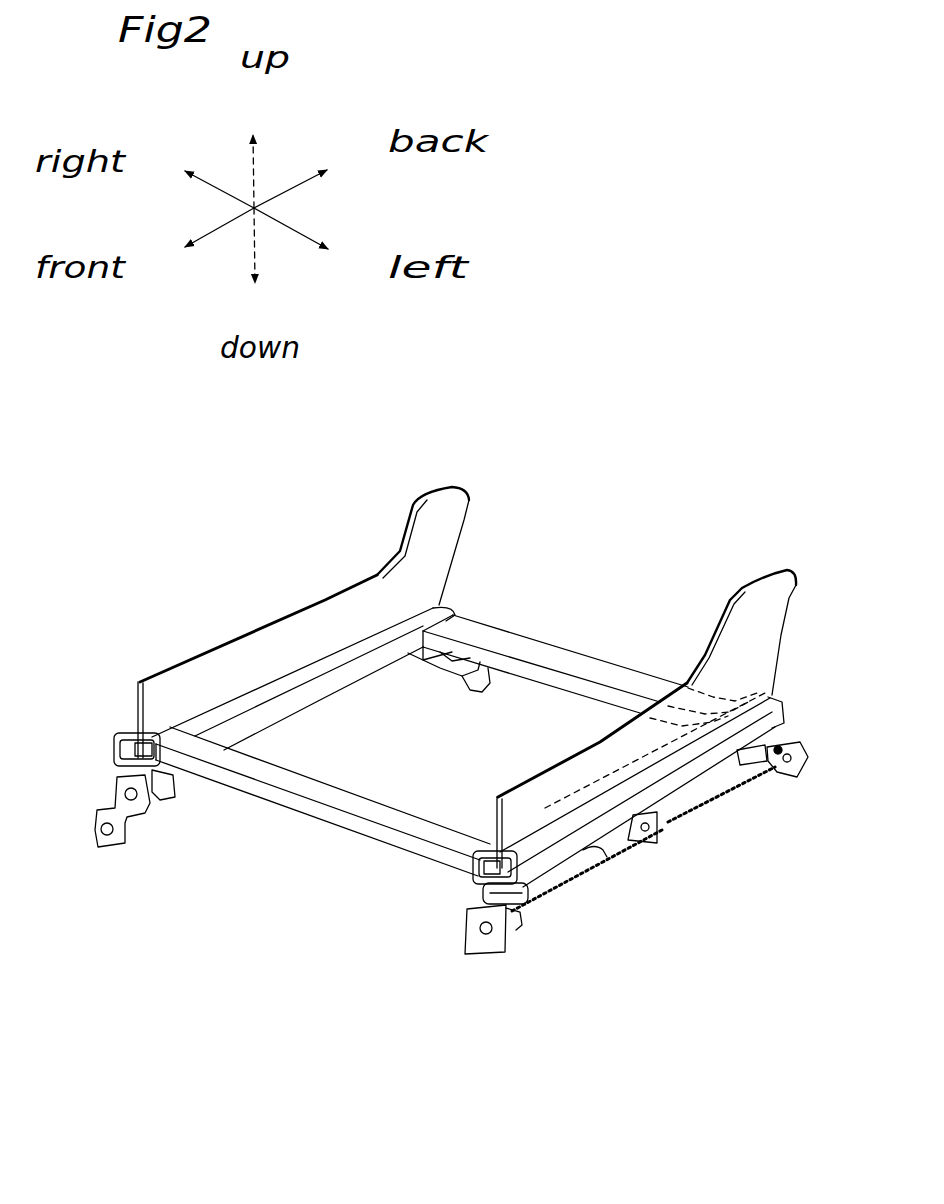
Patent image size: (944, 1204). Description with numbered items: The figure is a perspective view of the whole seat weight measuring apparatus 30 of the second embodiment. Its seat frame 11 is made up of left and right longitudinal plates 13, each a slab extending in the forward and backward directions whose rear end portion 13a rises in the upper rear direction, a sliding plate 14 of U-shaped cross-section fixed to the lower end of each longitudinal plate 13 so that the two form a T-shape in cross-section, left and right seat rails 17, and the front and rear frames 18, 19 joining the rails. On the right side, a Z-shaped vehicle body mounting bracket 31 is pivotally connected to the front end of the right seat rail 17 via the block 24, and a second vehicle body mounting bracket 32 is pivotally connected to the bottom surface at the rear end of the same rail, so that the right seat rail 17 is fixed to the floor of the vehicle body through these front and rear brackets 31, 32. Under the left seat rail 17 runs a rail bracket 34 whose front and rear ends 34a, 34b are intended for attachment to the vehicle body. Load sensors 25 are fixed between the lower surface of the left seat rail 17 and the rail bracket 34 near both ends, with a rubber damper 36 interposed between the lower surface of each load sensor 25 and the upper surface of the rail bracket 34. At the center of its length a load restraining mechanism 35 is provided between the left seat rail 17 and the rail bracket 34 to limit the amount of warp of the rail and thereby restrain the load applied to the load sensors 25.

The seat frame 11 is at (790, 652).
The longitudinal plate 13 is at (233, 673).
The rear end portion 13a is at (448, 518).
The sliding plate 14 is at (110, 760).
The seat rail 17 is at (292, 697).
The front frame 18 is at (345, 820).
The rear frame 19 is at (575, 663).
The block 24 is at (177, 800).
The load sensor 25 is at (483, 895).
The seat weight measuring apparatus 30 is at (648, 477).
The Z-shaped vehicle body mounting bracket 31 is at (104, 852).
The vehicle body mounting bracket 32 is at (493, 673).
The rail bracket 34 is at (600, 853).
The front end of rail bracket 34a is at (488, 947).
The rear end of rail bracket 34b is at (790, 747).
The load restraining mechanism 35 is at (660, 845).
The rubber damper 36 is at (522, 913).